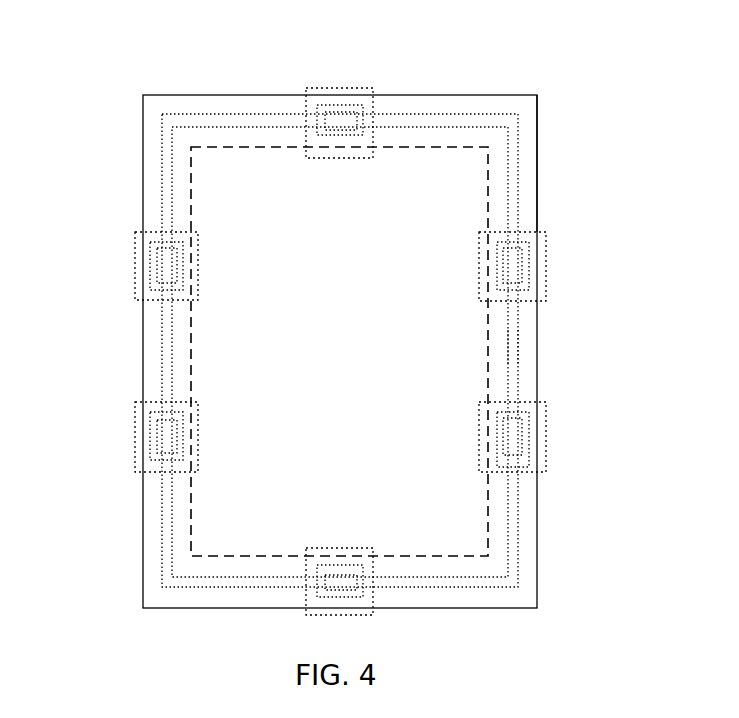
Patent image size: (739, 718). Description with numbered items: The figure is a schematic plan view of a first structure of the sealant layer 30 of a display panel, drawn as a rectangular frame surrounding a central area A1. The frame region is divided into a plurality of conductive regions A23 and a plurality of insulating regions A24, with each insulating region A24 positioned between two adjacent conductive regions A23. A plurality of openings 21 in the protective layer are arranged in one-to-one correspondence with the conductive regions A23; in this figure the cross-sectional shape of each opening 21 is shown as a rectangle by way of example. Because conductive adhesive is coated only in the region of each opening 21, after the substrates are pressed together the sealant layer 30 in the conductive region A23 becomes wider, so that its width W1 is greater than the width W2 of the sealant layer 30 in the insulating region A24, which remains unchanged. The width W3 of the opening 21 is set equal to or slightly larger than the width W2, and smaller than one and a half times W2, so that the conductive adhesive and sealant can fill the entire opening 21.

The sealant layer 30 is at (160, 193).
The opening 21 is at (527, 435).
The display area A1 is at (420, 192).
The conductive region A23 is at (350, 88).
The insulating region A24 is at (527, 150).
The width of the sealant layer in the conductive region W1 is at (445, 267).
The width of the sealant layer in the insulating region W2 is at (457, 348).
The width of the opening W3 is at (105, 437).